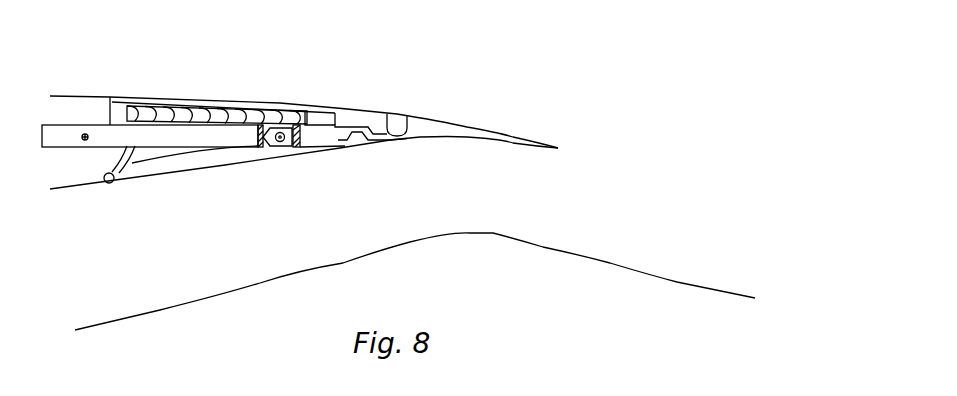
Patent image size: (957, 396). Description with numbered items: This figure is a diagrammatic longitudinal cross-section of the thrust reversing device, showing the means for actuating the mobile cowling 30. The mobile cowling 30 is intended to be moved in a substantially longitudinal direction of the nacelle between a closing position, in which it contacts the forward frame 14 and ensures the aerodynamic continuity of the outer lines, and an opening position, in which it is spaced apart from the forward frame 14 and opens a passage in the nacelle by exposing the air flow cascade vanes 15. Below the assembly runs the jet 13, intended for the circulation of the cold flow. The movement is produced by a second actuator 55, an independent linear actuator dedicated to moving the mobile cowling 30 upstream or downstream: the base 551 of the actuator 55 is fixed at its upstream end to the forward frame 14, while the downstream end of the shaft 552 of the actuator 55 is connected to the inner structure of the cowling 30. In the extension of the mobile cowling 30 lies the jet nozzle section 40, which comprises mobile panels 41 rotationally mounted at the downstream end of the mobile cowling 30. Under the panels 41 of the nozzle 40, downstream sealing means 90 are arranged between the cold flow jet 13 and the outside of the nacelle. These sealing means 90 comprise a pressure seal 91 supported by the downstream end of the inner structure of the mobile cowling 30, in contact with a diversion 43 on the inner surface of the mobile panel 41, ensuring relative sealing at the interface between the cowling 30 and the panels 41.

The jet 13 is at (568, 240).
The forward frame 14 is at (102, 185).
The air flow cascade vanes 15 is at (140, 103).
The mobile cowling 30 is at (310, 104).
The jet nozzle section 40 is at (540, 136).
The mobile panel 41 is at (465, 124).
The diversion 43 is at (405, 133).
The second actuator 55 is at (197, 137).
The downstream sealing means 90 is at (400, 130).
The pressure seal 91 is at (392, 118).
The base 551 is at (101, 137).
The shaft 552 is at (260, 123).